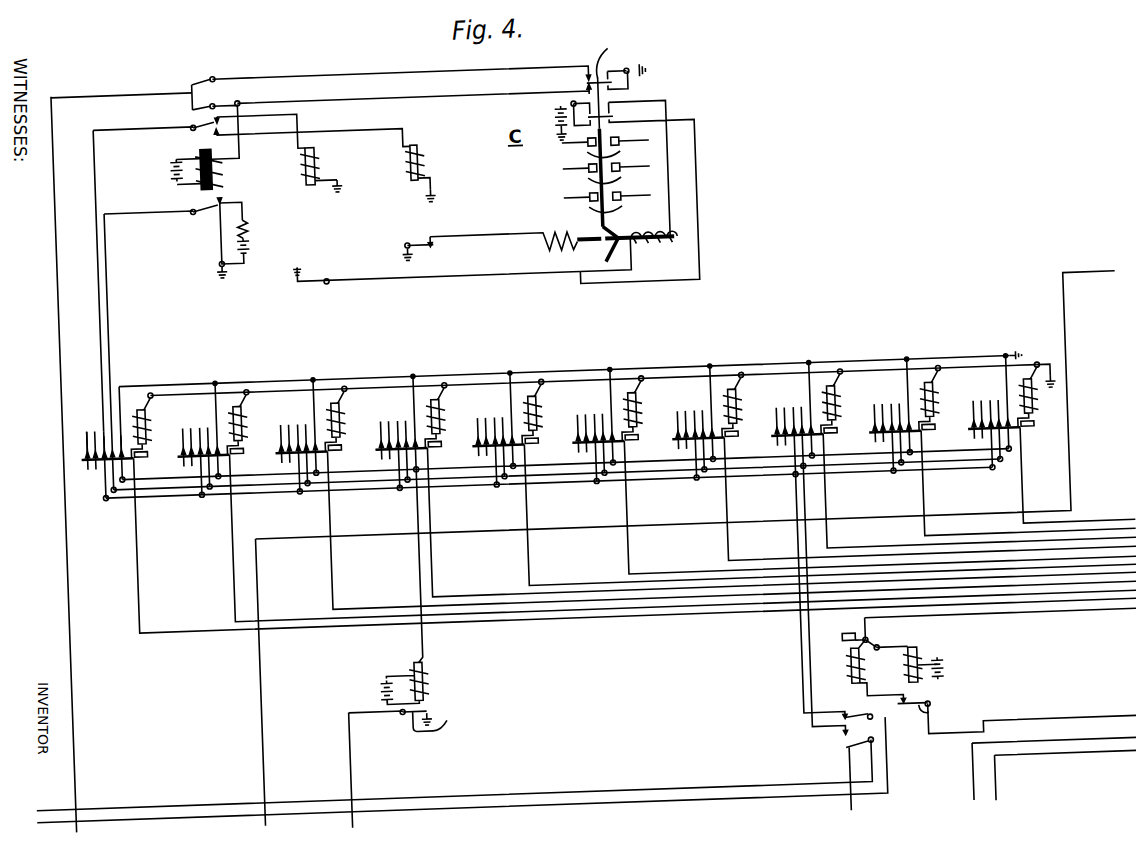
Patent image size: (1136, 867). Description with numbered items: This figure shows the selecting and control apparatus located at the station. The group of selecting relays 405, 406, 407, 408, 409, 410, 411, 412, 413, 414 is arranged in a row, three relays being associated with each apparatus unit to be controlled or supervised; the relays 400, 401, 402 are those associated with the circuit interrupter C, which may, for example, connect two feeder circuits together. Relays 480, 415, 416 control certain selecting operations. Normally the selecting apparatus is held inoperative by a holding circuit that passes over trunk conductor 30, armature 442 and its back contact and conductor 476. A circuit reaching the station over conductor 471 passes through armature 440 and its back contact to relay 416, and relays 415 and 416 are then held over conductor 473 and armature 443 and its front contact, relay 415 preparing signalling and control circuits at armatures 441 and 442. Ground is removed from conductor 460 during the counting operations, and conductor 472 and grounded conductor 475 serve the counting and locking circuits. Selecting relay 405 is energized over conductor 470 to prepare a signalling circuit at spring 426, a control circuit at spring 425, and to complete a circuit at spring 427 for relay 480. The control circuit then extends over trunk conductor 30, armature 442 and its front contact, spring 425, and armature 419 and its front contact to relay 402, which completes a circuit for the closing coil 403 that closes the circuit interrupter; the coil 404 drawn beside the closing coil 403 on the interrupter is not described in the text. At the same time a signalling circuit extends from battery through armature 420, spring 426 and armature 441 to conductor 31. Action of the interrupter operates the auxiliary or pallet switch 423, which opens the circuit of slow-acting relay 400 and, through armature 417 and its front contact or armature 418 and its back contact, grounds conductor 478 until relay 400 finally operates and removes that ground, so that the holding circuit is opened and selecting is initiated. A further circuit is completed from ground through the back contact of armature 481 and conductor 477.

The trunk conductor 30 is at (42, 792).
The conductor 31 is at (537, 804).
The slow-acting relay 400 is at (209, 144).
The relay 401 is at (314, 156).
The relay 402 is at (419, 152).
The closing coil 403 is at (549, 228).
The magnet coil 404 is at (640, 246).
The selecting relay 405 is at (148, 408).
The selecting relay 406 is at (244, 408).
The selecting relay 407 is at (342, 408).
The selecting relay 408 is at (442, 408).
The selecting relay 409 is at (539, 408).
The selecting relay 410 is at (639, 408).
The selecting relay 411 is at (739, 408).
The selecting relay 412 is at (838, 408).
The selecting relay 413 is at (936, 408).
The selecting relay 414 is at (1039, 379).
The relay 415 is at (875, 671).
The relay 416 is at (911, 668).
The armature 417 is at (206, 71).
The armature 418 is at (222, 96).
The armature 419 is at (202, 117).
The armature 420 is at (226, 205).
The auxiliary switch 423 is at (626, 154).
The spring 425 is at (86, 438).
The spring 426 is at (103, 440).
The spring 427 is at (119, 446).
The armature 440 is at (850, 640).
The armature 441 is at (834, 597).
The armature 442 is at (834, 757).
The armature 443 is at (919, 722).
The conductor 460 is at (1104, 294).
The conductor 470 is at (1096, 618).
The conductor 471 is at (1110, 629).
The conductor 472 is at (960, 824).
The conductor 473 is at (1102, 736).
The grounded conductor 475 is at (982, 820).
The conductor 476 is at (838, 817).
The conductor 477 is at (340, 816).
The conductor 478 is at (64, 815).
The relay 480 is at (416, 680).
The armature 481 is at (460, 717).